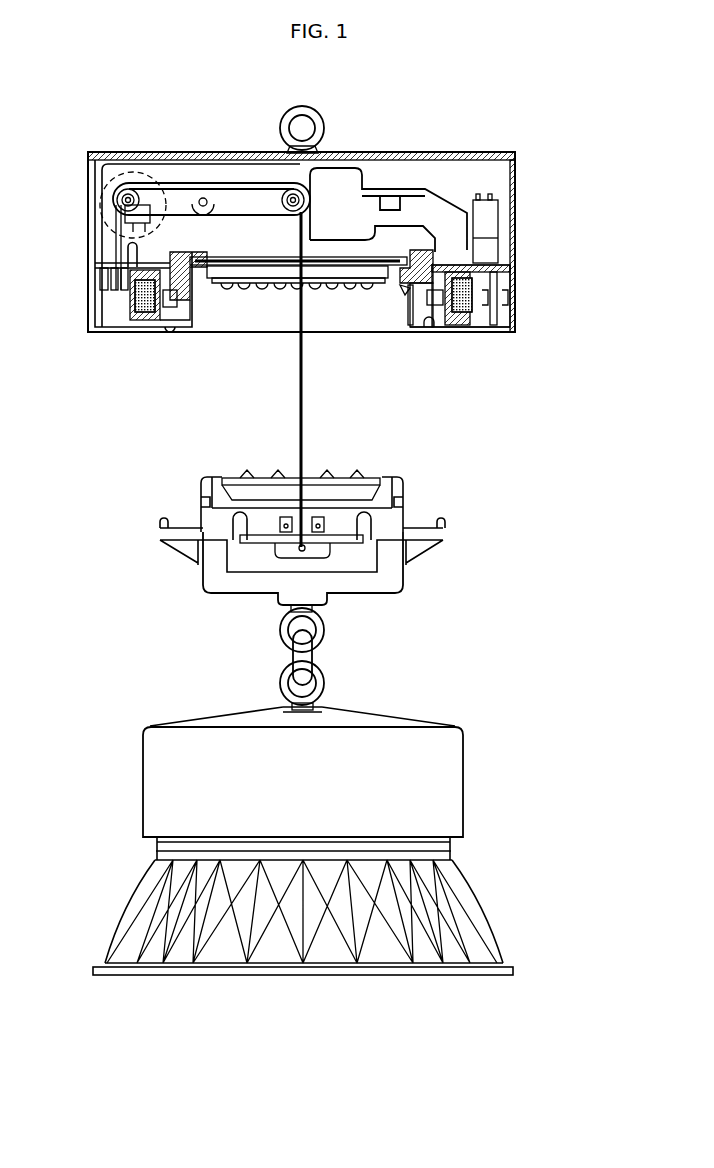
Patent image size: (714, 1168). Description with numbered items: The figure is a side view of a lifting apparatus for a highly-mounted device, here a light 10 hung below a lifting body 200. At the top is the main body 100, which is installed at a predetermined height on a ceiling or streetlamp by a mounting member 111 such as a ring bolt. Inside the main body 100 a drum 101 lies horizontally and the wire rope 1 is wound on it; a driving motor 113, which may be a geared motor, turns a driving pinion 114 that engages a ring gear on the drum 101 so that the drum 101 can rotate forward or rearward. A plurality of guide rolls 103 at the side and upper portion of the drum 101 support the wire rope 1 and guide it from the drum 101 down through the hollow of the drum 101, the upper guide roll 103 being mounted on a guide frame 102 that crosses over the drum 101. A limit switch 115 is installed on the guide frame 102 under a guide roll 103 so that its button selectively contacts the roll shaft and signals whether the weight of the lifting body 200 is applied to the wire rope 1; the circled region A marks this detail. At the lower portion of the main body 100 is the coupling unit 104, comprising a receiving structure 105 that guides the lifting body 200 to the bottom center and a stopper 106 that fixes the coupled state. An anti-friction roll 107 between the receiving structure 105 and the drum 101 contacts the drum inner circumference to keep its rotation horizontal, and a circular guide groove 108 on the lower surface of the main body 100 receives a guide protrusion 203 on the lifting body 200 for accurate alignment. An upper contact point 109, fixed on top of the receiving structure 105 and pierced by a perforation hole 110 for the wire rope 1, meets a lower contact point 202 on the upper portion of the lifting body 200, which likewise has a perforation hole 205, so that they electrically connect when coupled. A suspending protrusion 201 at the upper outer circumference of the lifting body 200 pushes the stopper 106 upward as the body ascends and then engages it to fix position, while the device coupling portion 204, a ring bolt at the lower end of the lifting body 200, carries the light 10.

The wire rope 1 is at (300, 386).
The light 10 is at (481, 768).
The main body 100 is at (546, 167).
The drum 101 is at (133, 258).
The guide frame 102 is at (232, 196).
The guide rolls 103 is at (267, 210).
The coupling unit 104 is at (405, 358).
The receiving structure 105 is at (407, 300).
The stopper 106 is at (398, 292).
The anti-friction roll 107 is at (435, 306).
The guide groove 108 is at (172, 331).
The upper contact point 109 is at (247, 300).
The perforation hole 110 is at (298, 290).
The mounting member 111 is at (318, 118).
The driving motor 113 is at (487, 218).
The driving pinion 114 is at (483, 275).
The limit switch 115 is at (120, 212).
The detail area A is at (135, 170).
The lifting body 200 is at (455, 545).
The suspending protrusion 201 is at (416, 494).
The lower contact point 202 is at (365, 450).
The guide protrusion 203 is at (160, 527).
The device coupling portion 204 is at (326, 628).
The perforation hole 205 is at (302, 495).